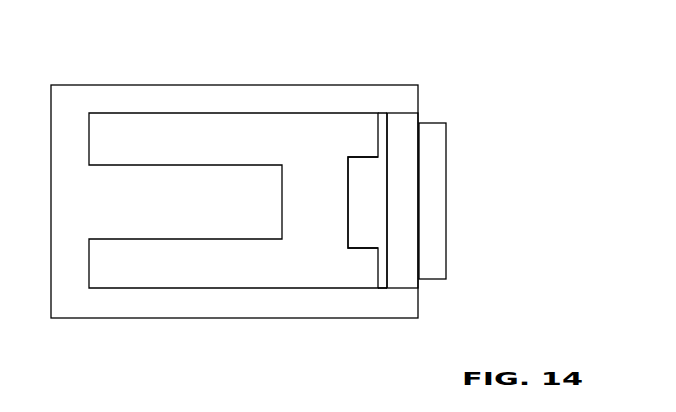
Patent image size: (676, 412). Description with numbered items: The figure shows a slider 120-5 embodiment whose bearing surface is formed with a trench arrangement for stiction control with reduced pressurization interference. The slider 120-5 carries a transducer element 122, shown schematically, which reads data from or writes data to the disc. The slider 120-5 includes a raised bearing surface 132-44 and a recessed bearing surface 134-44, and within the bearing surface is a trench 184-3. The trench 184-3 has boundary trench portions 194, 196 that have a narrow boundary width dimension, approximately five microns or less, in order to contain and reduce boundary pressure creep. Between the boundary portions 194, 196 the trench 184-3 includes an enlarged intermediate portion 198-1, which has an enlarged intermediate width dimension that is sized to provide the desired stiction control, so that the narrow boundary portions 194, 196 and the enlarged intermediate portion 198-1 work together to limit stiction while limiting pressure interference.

The raised bearing surface 132-44 is at (183, 138).
The recessed bearing surface 134-44 is at (285, 100).
The boundary trench portion 194 is at (385, 113).
The trench 184-3 is at (386, 150).
The enlarged intermediate portion 198-1 is at (362, 200).
The slider 120-5 is at (510, 187).
The transducer element 122 is at (428, 208).
The boundary trench portion 196 is at (383, 288).